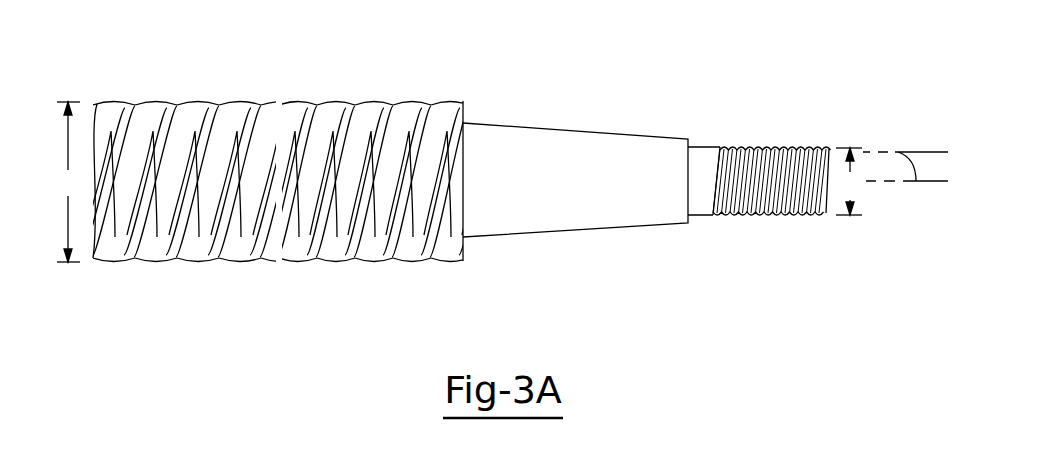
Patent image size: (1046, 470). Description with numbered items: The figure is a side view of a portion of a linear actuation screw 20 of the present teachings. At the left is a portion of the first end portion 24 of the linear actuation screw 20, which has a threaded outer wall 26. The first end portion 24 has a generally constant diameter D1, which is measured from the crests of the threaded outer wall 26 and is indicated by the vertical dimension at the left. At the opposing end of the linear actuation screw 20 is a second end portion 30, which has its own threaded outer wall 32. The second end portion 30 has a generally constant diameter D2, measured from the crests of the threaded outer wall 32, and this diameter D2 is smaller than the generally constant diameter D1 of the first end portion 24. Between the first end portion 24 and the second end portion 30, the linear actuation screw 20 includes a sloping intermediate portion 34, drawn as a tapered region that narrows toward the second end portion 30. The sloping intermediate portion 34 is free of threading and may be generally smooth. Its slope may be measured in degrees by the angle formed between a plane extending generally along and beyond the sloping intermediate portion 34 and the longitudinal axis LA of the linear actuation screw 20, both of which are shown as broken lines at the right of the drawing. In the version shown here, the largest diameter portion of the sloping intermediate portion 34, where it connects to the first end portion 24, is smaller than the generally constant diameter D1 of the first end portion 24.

The linear actuation screw 20 is at (133, 72).
The first end portion 24 is at (236, 99).
The threaded outer wall 26 is at (350, 112).
The second end portion 30 is at (705, 217).
The threaded outer wall 32 is at (748, 147).
The sloping intermediate portion 34 is at (575, 148).
The generally constant diameter of the first end portion D1 is at (68, 182).
The generally constant diameter of the second end portion D2 is at (849, 181).
The longitudinal axis LA is at (884, 182).